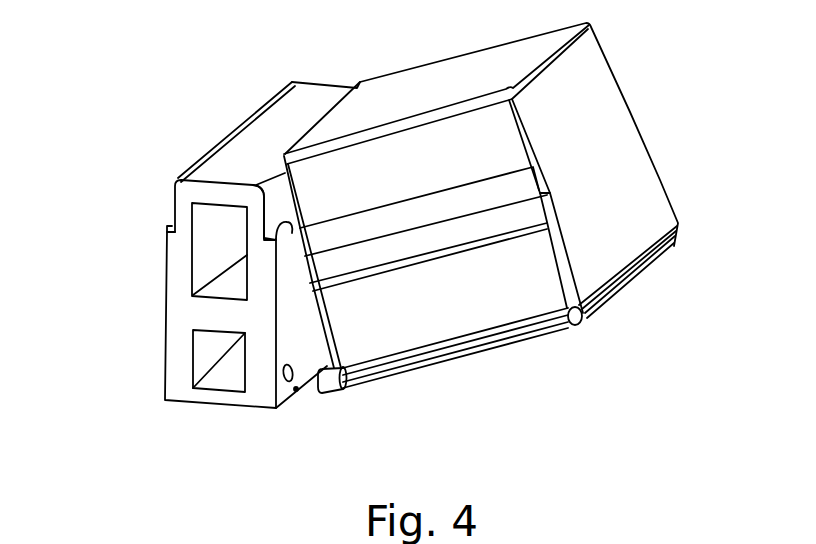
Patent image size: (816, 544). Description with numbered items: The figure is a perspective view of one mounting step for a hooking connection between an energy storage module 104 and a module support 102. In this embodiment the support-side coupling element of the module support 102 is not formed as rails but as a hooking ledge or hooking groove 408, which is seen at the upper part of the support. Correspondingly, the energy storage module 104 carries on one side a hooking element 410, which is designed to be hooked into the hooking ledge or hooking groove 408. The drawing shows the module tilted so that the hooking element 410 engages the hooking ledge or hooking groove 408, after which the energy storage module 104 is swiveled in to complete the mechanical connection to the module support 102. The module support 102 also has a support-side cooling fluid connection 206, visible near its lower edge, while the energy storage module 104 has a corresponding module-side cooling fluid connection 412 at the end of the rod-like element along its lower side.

The module support 102 is at (165, 320).
The energy storage module 104 is at (611, 63).
The support-side cooling fluid connection 206 is at (297, 391).
The hooking ledge or hooking groove 408 is at (260, 192).
The hooking element 410 is at (280, 222).
The module-side cooling fluid connection 412 is at (331, 394).